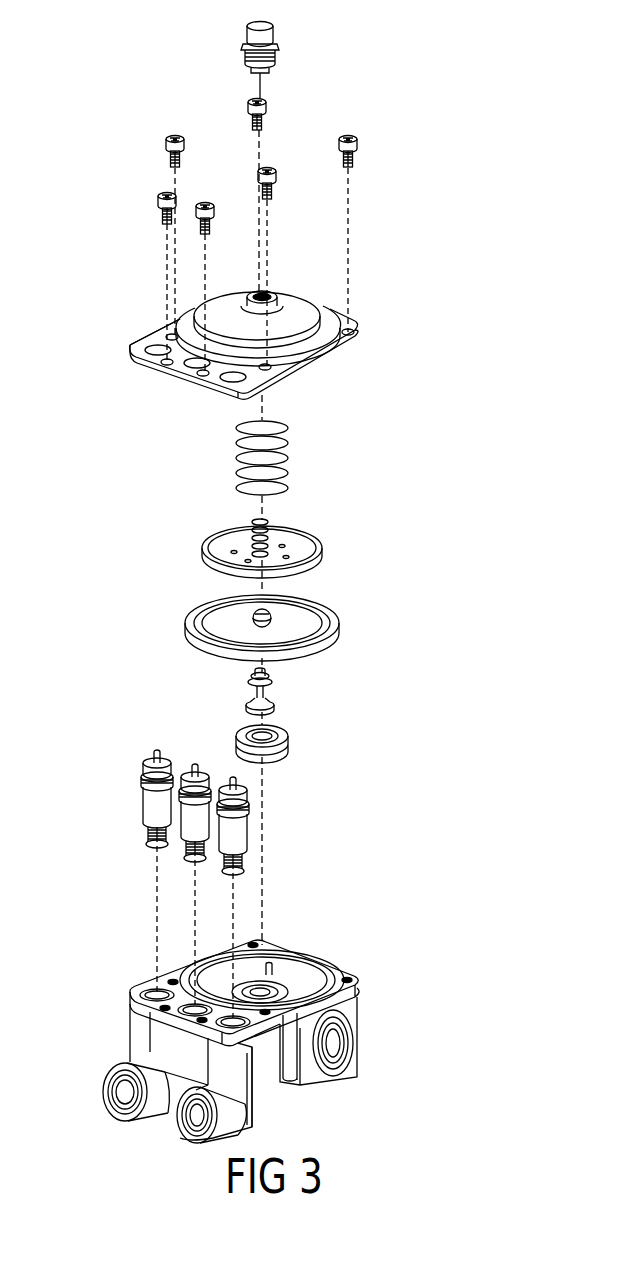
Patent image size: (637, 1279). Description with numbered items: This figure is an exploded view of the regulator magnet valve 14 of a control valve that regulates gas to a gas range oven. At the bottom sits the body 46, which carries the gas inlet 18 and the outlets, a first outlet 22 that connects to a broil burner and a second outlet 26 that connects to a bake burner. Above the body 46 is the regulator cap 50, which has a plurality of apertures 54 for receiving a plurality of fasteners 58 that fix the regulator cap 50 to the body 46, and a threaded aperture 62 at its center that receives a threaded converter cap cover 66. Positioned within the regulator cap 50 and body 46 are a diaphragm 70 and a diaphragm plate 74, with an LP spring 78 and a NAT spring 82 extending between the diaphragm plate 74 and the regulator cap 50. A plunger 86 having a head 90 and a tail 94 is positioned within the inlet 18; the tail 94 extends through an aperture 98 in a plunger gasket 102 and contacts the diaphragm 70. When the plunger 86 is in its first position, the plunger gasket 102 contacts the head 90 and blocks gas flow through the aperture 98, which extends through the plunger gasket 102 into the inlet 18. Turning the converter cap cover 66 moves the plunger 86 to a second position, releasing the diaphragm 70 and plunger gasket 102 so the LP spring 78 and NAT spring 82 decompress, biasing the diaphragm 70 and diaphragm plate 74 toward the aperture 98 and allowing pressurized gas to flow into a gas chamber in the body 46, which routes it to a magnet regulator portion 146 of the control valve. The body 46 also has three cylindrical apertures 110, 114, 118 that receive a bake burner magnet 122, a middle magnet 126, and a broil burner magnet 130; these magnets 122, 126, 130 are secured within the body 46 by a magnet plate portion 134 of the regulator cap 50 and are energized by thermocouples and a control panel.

The regulator magnet valve 14 is at (410, 670).
The gas inlet 18 is at (353, 1036).
The first outlet 22 is at (177, 1128).
The second outlet 26 is at (103, 1088).
The body 46 is at (345, 945).
The regulator cap 50 is at (340, 350).
The apertures 54 is at (353, 332).
The fasteners 58 is at (248, 108).
The threaded aperture 62 is at (272, 292).
The converter cap cover 66 is at (277, 50).
The diaphragm 70 is at (197, 618).
The diaphragm plate 74 is at (204, 550).
The LP spring 78 is at (269, 520).
The NAT spring 82 is at (290, 452).
The plunger 86 is at (266, 692).
The head 90 is at (276, 708).
The tail 94 is at (250, 676).
The aperture 98 is at (255, 733).
The plunger gasket 102 is at (285, 750).
The cylindrical aperture 110 is at (157, 989).
The cylindrical aperture 114 is at (180, 1012).
The cylindrical aperture 118 is at (282, 1080).
The bake burner magnet 122 is at (152, 792).
The middle magnet 126 is at (188, 810).
The broil burner magnet 130 is at (227, 822).
The magnet plate portion 134 is at (138, 349).
The magnet regulator portion 146 is at (250, 1085).